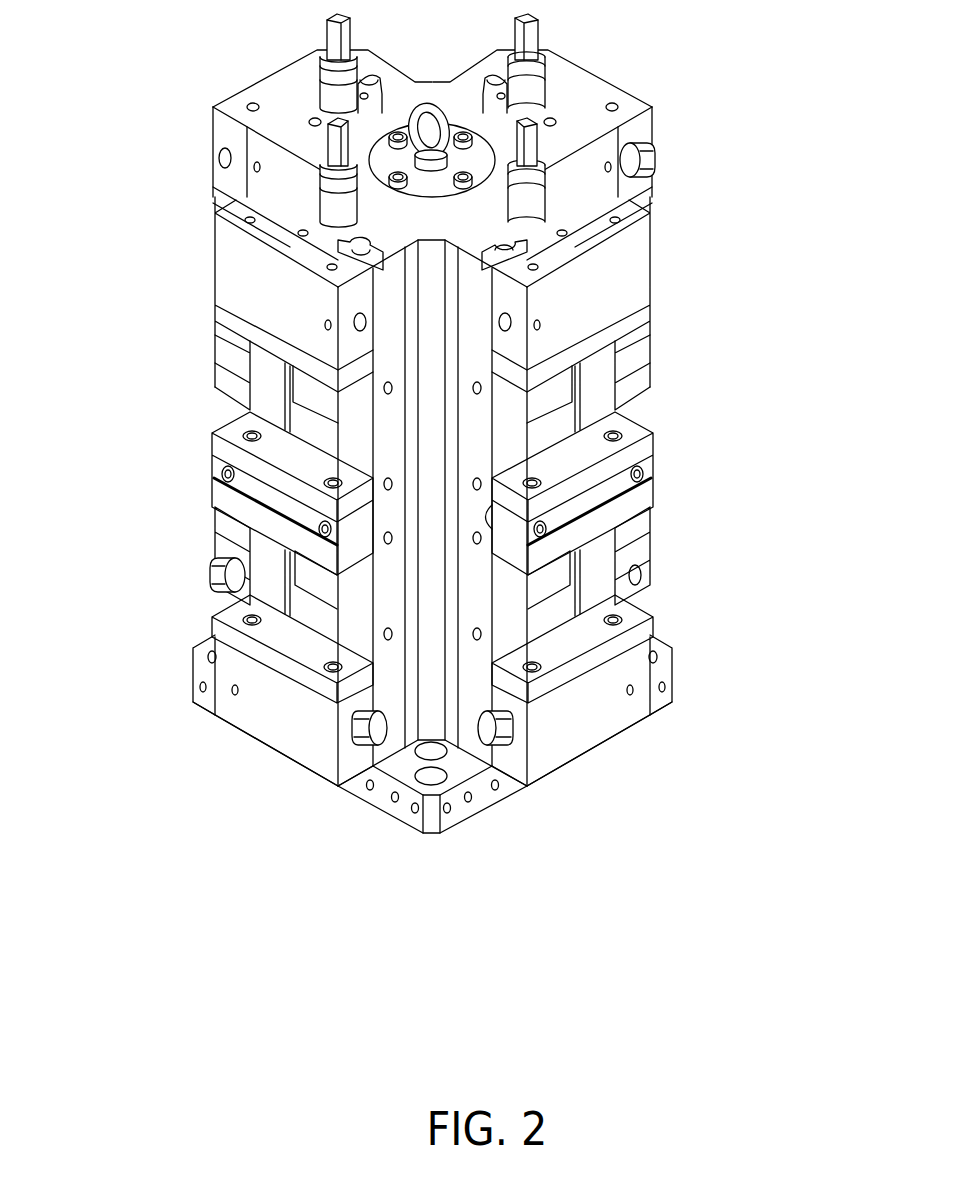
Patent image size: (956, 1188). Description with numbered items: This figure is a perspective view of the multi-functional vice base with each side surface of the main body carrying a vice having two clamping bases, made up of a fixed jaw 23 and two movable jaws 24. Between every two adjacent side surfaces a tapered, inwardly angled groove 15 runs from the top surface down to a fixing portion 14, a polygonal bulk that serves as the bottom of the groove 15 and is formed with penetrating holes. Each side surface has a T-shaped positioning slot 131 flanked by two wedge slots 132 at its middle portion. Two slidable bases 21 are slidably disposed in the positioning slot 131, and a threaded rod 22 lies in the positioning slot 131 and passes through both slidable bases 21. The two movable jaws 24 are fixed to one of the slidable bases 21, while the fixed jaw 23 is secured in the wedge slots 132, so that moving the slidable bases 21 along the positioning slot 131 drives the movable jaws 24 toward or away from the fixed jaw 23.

The fixing portion 14 is at (463, 772).
The groove 15 is at (432, 388).
The slidable base 21 is at (327, 123).
The threaded rod 22 is at (337, 146).
The fixed jaw 23 is at (248, 491).
The movable jaw 24 is at (241, 282).
The positioning slot 131 is at (360, 236).
The wedge slot 132 is at (483, 517).